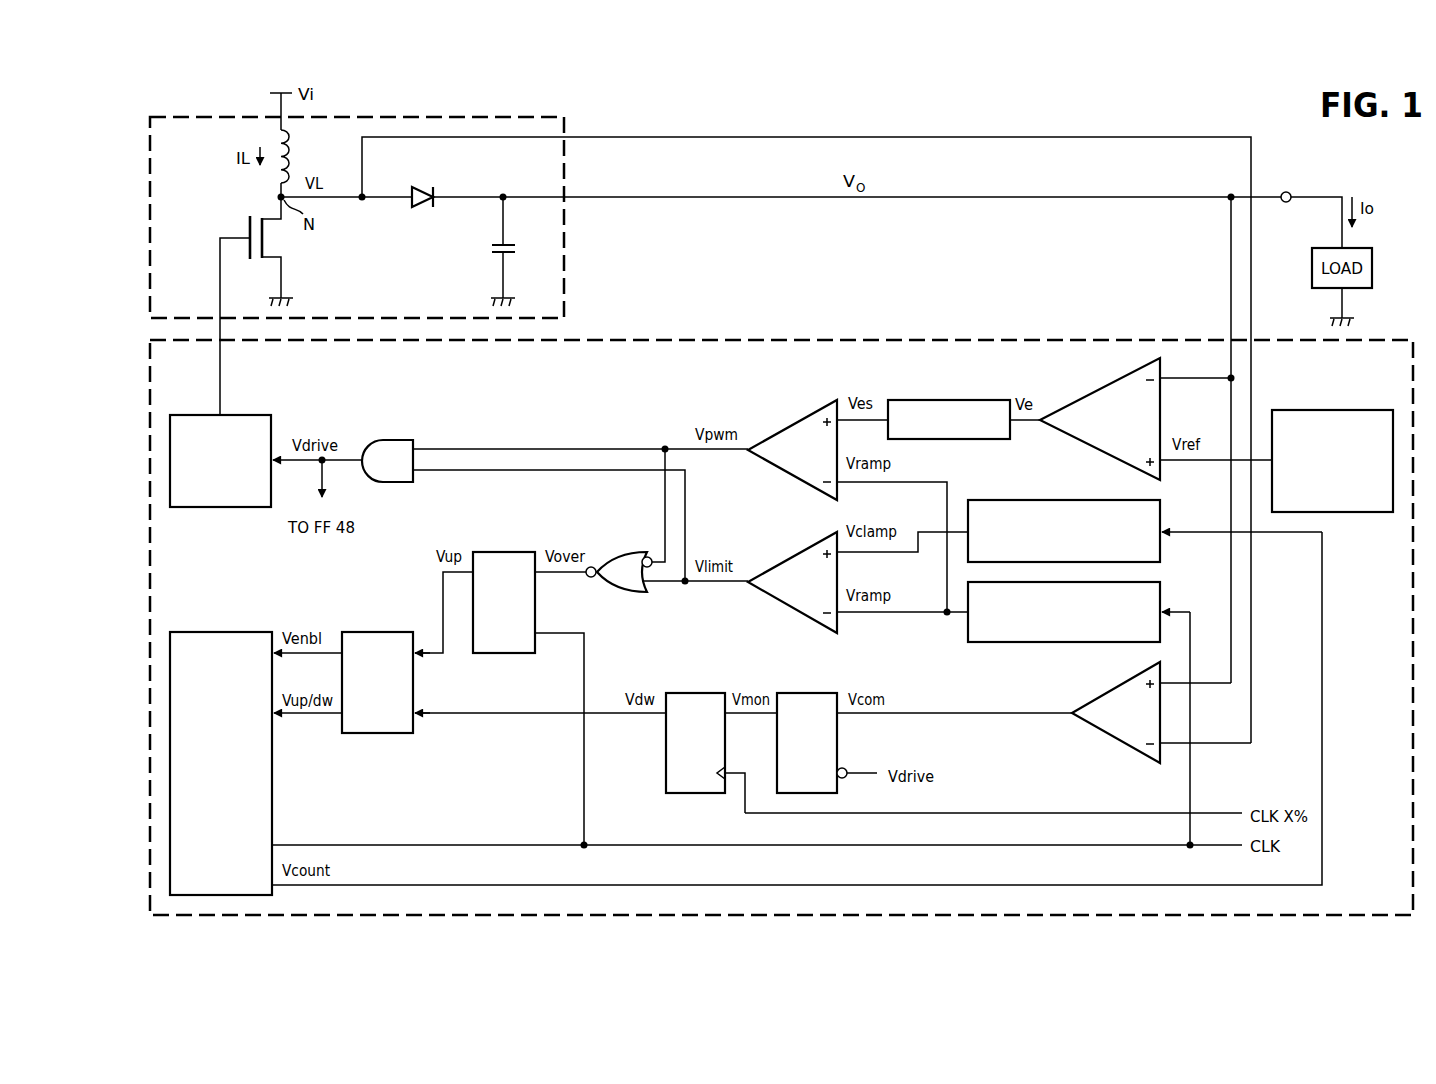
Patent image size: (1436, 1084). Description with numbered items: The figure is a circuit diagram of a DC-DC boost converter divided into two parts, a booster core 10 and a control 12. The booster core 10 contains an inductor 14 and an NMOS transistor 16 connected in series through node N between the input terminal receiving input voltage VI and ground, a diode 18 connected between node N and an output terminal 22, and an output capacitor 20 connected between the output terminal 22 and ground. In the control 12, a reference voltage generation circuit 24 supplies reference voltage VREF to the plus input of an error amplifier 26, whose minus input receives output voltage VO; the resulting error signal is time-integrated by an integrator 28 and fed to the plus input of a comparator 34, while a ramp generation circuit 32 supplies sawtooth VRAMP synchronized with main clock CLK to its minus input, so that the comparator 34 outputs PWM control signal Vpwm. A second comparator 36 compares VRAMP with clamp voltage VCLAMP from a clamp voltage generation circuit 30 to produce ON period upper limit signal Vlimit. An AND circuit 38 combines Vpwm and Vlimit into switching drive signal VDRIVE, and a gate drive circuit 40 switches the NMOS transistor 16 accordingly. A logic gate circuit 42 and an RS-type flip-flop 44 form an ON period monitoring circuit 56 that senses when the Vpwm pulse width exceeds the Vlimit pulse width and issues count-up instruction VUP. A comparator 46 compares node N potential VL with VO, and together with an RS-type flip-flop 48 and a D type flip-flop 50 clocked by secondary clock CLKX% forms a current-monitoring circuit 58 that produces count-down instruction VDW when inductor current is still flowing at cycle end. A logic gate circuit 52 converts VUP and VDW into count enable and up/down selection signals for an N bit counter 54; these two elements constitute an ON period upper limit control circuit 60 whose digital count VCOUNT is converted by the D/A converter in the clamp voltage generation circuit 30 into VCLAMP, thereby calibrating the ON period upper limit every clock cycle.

The booster core 10 is at (572, 220).
The control 12 is at (1025, 334).
The inductor 14 is at (290, 157).
The NMOS transistor 16 is at (247, 225).
The diode 18 is at (424, 189).
The output capacitor 20 is at (490, 248).
The output terminal 22 is at (1287, 192).
The reference voltage generation circuit 24 is at (1342, 410).
The error amplifier 26 is at (1097, 385).
The integrator 28 is at (948, 400).
The clamp voltage generation circuit 30 is at (1163, 515).
The ramp generation circuit 32 is at (1163, 597).
The comparator 34 is at (790, 422).
The comparator 36 is at (790, 553).
The AND circuit 38 is at (393, 440).
The gate drive circuit 40 is at (202, 415).
The logic gate circuit 42 is at (625, 552).
The RS-type flip-flop 44 is at (503, 552).
The comparator 46 is at (1110, 742).
The RS-type flip-flop 48 is at (807, 693).
The D type flip-flop 50 is at (666, 745).
The logic gate circuit 52 is at (377, 733).
The N bit counter 54 is at (206, 806).
The ON period monitoring circuit 56 is at (562, 579).
The current-monitoring circuit 58 is at (728, 706).
The ON period upper limit control circuit 60 is at (291, 722).